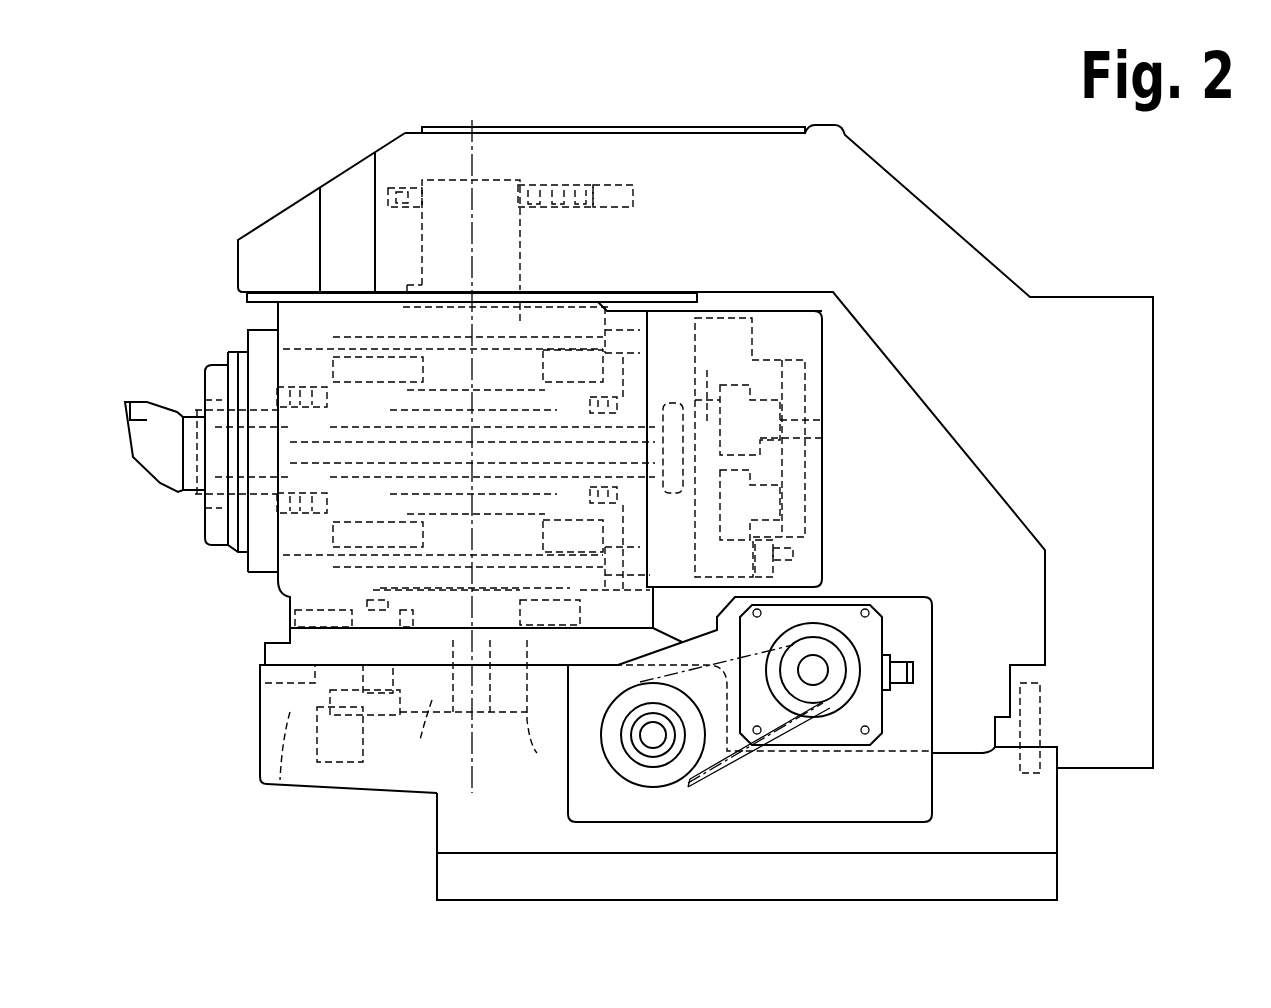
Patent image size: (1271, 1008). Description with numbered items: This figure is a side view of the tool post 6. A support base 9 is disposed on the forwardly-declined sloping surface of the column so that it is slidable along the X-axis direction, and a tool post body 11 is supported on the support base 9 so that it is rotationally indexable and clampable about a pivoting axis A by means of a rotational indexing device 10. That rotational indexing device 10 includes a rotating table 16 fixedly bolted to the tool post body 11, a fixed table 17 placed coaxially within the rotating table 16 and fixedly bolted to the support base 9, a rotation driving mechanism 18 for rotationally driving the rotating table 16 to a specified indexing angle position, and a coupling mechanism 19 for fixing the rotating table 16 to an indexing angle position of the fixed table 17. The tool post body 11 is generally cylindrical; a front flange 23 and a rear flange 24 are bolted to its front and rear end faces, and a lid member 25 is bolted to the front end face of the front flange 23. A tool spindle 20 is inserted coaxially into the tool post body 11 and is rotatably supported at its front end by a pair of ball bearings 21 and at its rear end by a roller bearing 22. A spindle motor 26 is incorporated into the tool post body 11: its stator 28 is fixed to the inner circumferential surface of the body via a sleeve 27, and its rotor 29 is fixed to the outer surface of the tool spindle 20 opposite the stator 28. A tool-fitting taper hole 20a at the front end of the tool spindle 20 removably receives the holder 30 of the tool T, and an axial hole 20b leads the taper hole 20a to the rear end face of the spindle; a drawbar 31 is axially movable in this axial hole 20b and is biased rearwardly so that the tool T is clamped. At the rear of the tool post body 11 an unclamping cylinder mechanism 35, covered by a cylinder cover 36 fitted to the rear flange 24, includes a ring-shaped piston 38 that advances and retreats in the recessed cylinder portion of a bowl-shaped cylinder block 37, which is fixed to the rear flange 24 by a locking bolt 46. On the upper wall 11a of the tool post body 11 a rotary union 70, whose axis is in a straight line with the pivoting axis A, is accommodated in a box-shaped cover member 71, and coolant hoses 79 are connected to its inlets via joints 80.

The tool post 6 is at (952, 170).
The cover member 71 is at (845, 133).
The rotary union 70 is at (498, 176).
The joints 80 is at (392, 187).
The coolant hoses 79 is at (633, 185).
The upper wall 11a is at (640, 290).
The tool post body 11 is at (286, 607).
The spindle motor 26 is at (338, 375).
The stator 28 is at (527, 353).
The rotor 29 is at (497, 387).
The sleeve 27 is at (598, 298).
The roller bearing 22 is at (622, 439).
The drawbar 31 is at (615, 552).
The tool spindle 20 is at (226, 358).
The tool-fitting taper hole 20a is at (197, 408).
The axial hole 20b is at (615, 413).
The lid member 25 is at (203, 538).
The front flange 23 is at (247, 567).
The ball bearings 21 is at (282, 515).
The holder 30 is at (203, 512).
The tool T is at (147, 465).
The cylinder cover 36 is at (822, 347).
The unclamping cylinder mechanism 35 is at (823, 462).
The cylinder block 37 is at (822, 402).
The piston 38 is at (801, 489).
The locking bolt 46 is at (805, 573).
The rear flange 24 is at (750, 709).
The rotation driving mechanism 18 is at (808, 732).
The rotational indexing device 10 is at (256, 758).
The rotating table 16 is at (290, 712).
The coupling mechanism 19 is at (404, 692).
The fixed table 17 is at (433, 700).
The support base 9 is at (427, 797).
The pivoting axis A is at (476, 757).